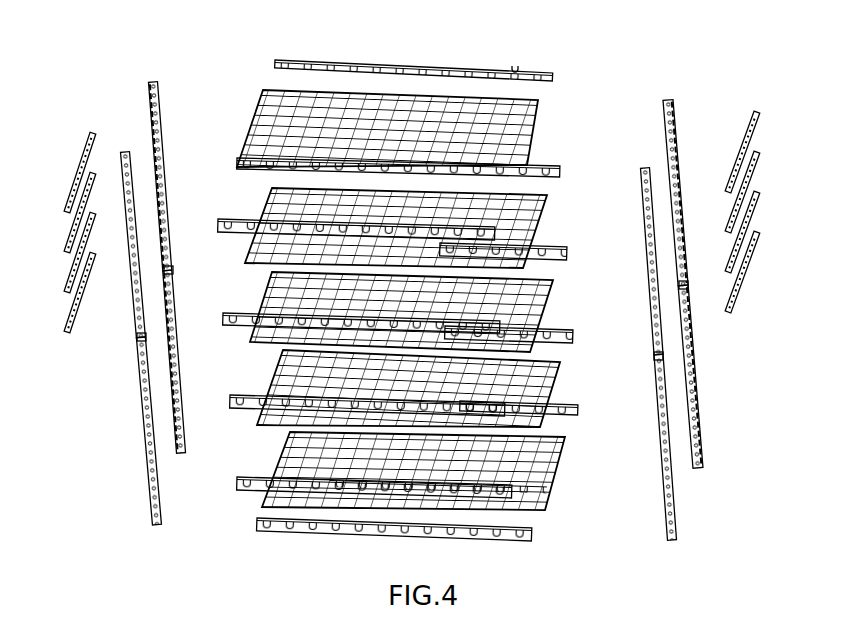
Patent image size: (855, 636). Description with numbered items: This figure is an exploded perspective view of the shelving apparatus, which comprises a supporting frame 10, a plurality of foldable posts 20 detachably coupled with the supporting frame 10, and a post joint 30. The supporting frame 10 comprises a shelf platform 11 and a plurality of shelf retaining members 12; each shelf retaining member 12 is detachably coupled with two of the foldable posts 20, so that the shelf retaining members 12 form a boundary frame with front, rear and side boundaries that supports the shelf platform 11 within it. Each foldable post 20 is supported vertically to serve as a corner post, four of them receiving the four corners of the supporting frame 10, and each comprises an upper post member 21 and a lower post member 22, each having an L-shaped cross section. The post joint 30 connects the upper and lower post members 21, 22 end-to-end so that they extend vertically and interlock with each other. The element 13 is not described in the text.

The supporting frame 10 is at (605, 568).
The shelf platform 11 is at (520, 130).
The shelf retaining member 12 is at (57, 213).
The beam notch 13 is at (515, 73).
The foldable post 20 is at (112, 540).
The upper post member 21 is at (125, 152).
The lower post member 22 is at (147, 443).
The post joint 30 is at (168, 270).